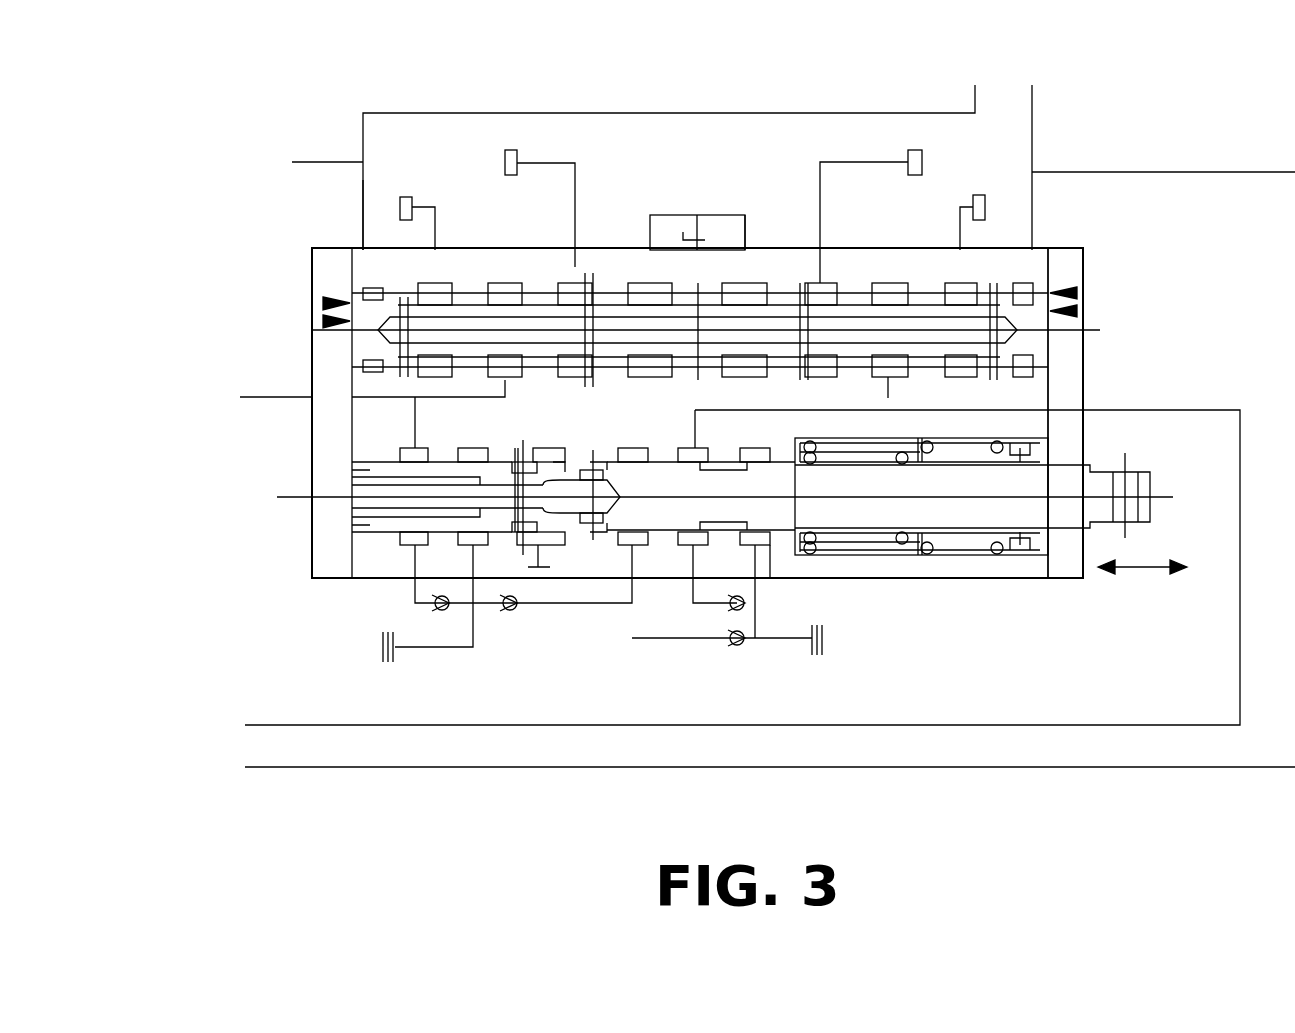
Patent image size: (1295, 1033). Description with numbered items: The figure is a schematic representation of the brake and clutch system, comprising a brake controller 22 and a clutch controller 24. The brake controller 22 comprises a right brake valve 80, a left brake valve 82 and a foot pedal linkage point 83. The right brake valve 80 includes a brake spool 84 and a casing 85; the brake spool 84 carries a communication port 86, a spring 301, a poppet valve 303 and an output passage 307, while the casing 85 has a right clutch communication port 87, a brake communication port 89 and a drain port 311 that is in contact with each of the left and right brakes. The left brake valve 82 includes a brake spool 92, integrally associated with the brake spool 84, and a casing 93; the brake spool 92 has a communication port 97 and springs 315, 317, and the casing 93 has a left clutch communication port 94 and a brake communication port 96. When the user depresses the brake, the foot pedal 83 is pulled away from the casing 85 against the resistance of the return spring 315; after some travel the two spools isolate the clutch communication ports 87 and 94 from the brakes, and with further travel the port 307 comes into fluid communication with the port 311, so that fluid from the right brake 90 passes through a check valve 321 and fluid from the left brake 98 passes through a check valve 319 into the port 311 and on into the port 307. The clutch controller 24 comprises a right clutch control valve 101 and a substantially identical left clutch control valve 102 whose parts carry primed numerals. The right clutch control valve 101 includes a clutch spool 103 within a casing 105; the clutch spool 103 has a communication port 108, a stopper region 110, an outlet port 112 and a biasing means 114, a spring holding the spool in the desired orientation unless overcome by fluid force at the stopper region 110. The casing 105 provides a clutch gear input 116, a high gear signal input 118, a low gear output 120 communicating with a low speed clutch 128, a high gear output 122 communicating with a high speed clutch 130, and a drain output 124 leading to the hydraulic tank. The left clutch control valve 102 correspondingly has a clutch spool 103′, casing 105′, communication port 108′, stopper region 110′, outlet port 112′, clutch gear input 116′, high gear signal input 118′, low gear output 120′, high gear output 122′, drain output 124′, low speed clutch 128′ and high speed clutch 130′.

The brake controller 22 is at (312, 575).
The clutch controller 24 is at (312, 362).
The right brake valve 80 is at (358, 470).
The left brake valve 82 is at (620, 548).
The foot pedal linkage point 83 is at (1143, 470).
The brake spool 84 is at (495, 523).
The casing 85 is at (372, 600).
The communication port 86 is at (372, 530).
The right clutch communication port 87 is at (375, 450).
The brake communication port 89 is at (613, 520).
The right brake 90 is at (378, 650).
The brake spool 92 is at (782, 548).
The casing 93 is at (660, 448).
The left clutch communication port 94 is at (700, 448).
The brake communication port 96 is at (790, 585).
The communication port 97 is at (682, 548).
The left brake 98 is at (820, 612).
The right clutch control valve 101 is at (403, 283).
The left clutch control valve 102 is at (980, 283).
The clutch spool 103 is at (352, 322).
The clutch spool 103′ is at (1075, 311).
The casing 105 is at (590, 283).
The casing 105′ is at (1060, 250).
The communication port 108 is at (475, 290).
The communication port 108′ is at (925, 283).
The stopper region 110 is at (352, 305).
The stopper region 110′ is at (1075, 293).
The outlet port 112 is at (617, 280).
The outlet port 112′ is at (783, 281).
The biasing means 114 is at (700, 237).
The clutch gear input 116 is at (500, 380).
The clutch gear input 116′ is at (888, 390).
The high gear signal input 118 is at (363, 217).
The high gear signal input 118′ is at (987, 207).
The low gear output 120 is at (433, 265).
The low gear output 120′ is at (960, 227).
The high gear output 122 is at (560, 267).
The high gear output 122′ is at (858, 162).
The drain output 124 is at (678, 215).
The drain output 124′ is at (748, 227).
The low speed clutch 128 is at (400, 205).
The low speed clutch 128′ is at (987, 198).
The high speed clutch 130 is at (512, 150).
The high speed clutch 130′ is at (920, 150).
The spring 301 is at (358, 510).
The poppet valve 303 is at (555, 548).
The output passage 307 is at (373, 442).
The drain port 311 is at (603, 548).
The return spring 315 is at (870, 557).
The spring 317 is at (978, 557).
The check valve 319 is at (735, 646).
The check valve 321 is at (537, 567).